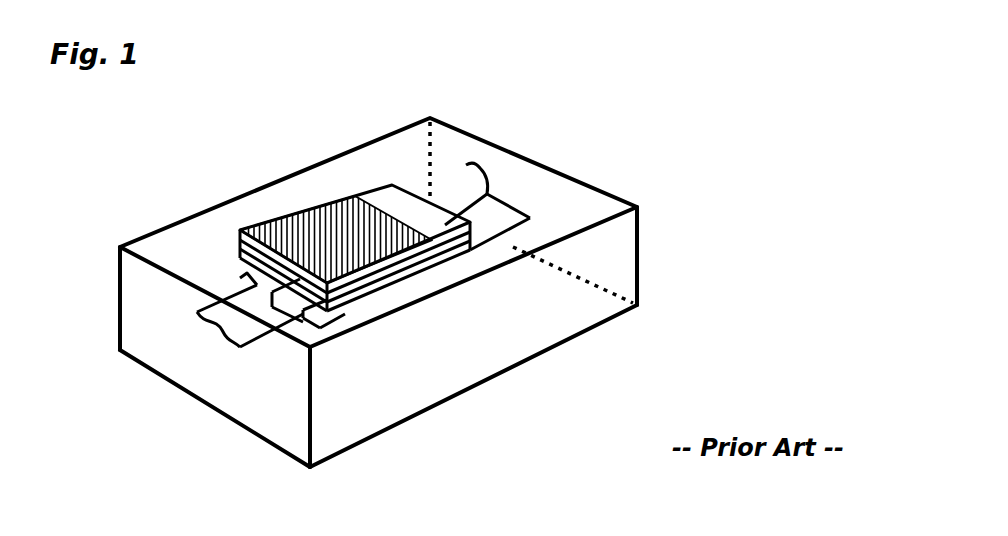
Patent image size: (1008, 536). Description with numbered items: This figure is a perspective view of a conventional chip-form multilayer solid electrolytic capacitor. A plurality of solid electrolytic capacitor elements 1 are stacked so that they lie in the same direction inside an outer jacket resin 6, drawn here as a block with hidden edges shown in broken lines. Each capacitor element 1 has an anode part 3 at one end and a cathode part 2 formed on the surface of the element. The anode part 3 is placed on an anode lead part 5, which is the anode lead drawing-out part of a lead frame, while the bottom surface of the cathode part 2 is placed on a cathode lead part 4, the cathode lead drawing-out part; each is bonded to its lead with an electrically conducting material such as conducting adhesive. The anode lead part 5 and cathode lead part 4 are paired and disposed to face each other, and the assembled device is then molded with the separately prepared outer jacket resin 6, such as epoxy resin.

The solid electrolytic capacitor element 1 is at (401, 297).
The cathode part 2 is at (338, 245).
The anode part 3 is at (433, 227).
The cathode lead part 4 is at (280, 300).
The anode lead part 5 is at (490, 217).
The outer jacket resin 6 is at (583, 298).